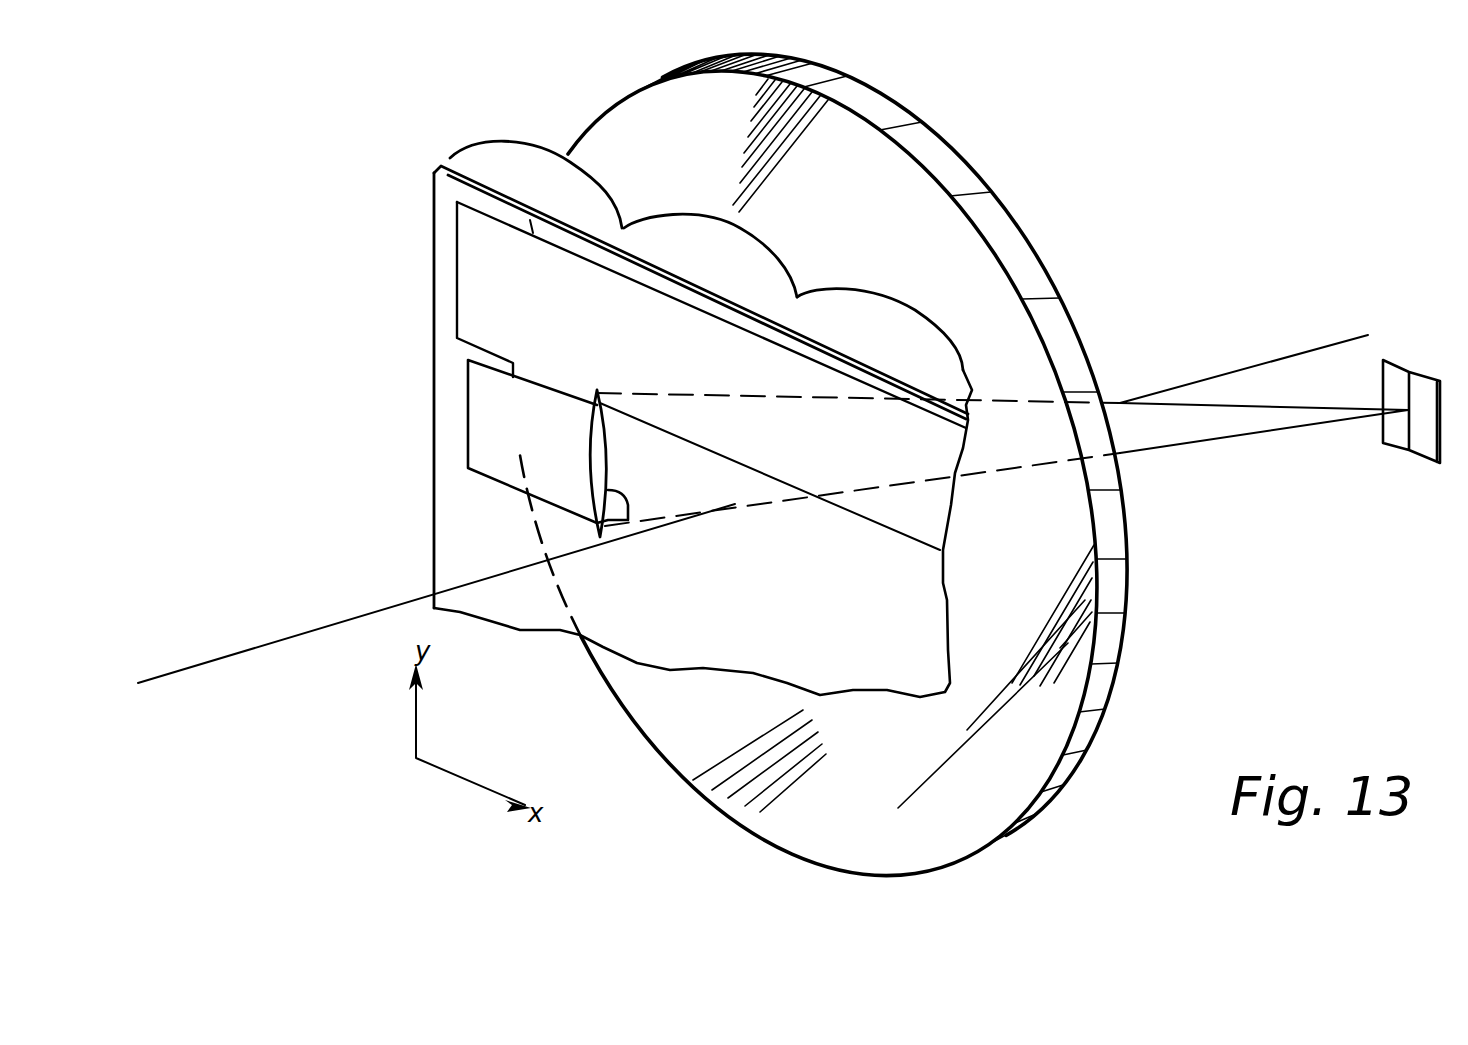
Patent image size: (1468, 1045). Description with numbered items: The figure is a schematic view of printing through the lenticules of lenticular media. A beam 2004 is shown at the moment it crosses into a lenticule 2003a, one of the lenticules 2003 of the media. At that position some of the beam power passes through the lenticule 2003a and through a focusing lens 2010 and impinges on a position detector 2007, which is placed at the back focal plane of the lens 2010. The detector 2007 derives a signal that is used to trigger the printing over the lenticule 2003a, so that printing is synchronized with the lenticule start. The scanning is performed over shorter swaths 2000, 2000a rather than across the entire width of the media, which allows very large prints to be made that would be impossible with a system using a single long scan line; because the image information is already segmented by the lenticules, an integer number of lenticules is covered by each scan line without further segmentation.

The swath 2000 is at (472, 312).
The swath 2000a is at (483, 450).
The lenticule 2003 is at (603, 183).
The lenticule 2003a is at (762, 242).
The beam 2004 is at (627, 530).
The position detector 2007 is at (1422, 455).
The focusing lens 2010 is at (660, 93).